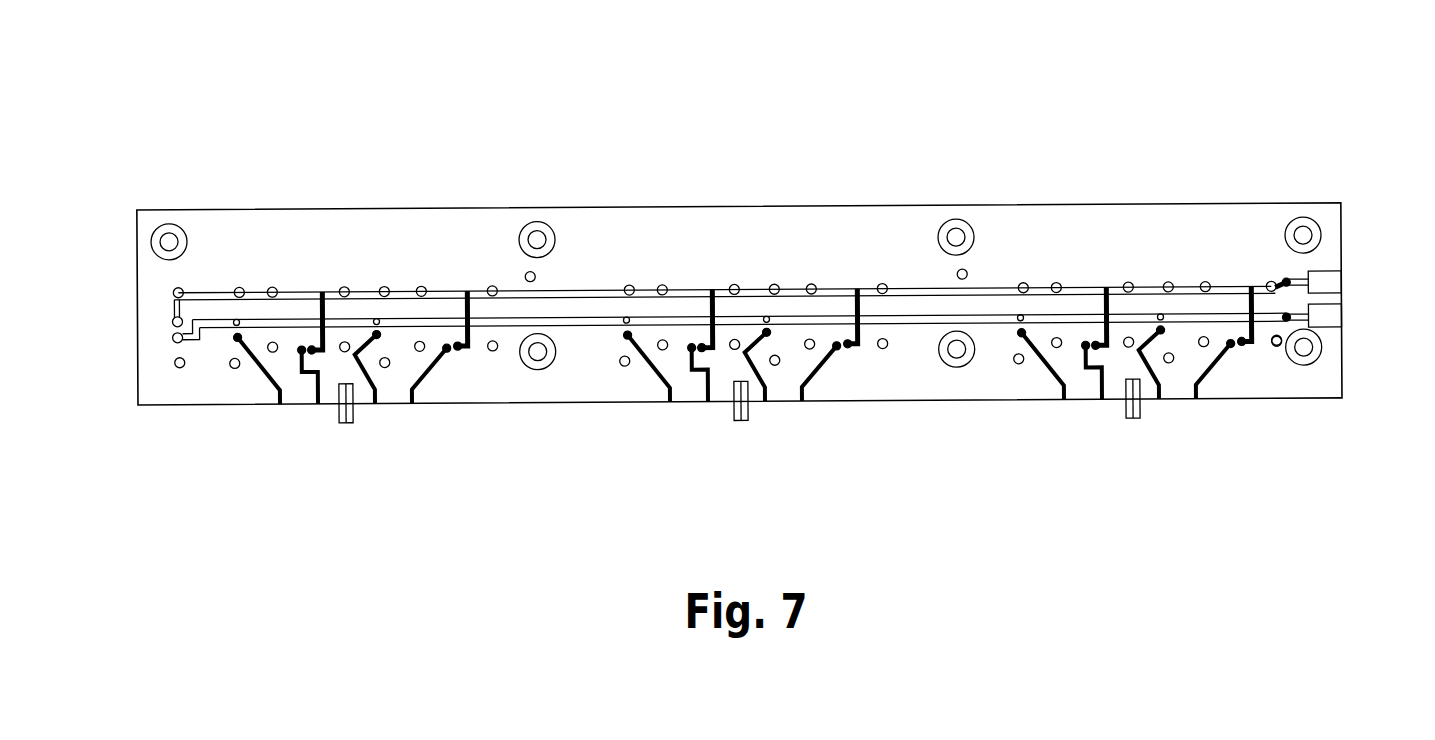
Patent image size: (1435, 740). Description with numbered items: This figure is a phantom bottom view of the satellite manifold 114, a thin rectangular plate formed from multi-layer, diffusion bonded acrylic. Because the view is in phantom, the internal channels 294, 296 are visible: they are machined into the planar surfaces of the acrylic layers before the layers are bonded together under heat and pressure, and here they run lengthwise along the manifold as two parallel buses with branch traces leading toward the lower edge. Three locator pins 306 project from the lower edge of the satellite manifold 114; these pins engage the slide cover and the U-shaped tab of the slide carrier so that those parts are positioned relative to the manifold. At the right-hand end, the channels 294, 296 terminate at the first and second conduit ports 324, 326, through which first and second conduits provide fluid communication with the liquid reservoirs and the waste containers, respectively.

The satellite manifold 114 is at (1192, 131).
The channel 294 is at (588, 292).
The channel 296 is at (578, 322).
The locator pin 306 is at (347, 423).
The first conduit port 324 is at (1342, 282).
The second conduit port 326 is at (1342, 315).